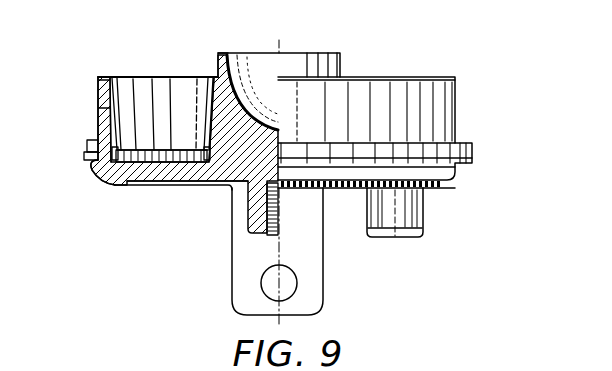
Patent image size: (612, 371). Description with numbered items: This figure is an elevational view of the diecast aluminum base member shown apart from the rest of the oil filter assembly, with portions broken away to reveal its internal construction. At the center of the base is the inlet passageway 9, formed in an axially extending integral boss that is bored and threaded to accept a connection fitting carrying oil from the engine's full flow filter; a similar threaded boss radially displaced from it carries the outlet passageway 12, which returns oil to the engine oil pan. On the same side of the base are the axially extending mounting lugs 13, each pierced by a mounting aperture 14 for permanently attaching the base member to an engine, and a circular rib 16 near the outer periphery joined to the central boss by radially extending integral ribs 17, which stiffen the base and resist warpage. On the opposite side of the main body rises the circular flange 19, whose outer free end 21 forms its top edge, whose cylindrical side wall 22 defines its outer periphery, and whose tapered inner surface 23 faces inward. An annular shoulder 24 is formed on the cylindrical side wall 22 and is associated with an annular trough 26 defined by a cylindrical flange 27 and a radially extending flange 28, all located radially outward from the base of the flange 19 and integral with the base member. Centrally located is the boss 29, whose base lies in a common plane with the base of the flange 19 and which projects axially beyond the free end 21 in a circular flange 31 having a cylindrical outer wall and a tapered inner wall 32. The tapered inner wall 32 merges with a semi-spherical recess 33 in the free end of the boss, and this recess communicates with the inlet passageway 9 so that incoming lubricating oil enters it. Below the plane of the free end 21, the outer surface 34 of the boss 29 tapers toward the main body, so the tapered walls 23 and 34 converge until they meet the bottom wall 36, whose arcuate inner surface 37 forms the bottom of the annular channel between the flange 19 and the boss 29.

The inlet passageway 9 is at (270, 237).
The outlet passageway 12 is at (404, 237).
The mounting lugs 13 is at (323, 290).
The mounting aperture 14 is at (282, 274).
The circular rib 16 is at (120, 188).
The radially extending integral ribs 17 is at (203, 187).
The circular flange 19 is at (100, 78).
The outer free end 21 is at (101, 77).
The cylindrical side wall 22 is at (99, 87).
The tapered inner surface 23 is at (112, 80).
The shoulder 24 is at (99, 108).
The annular trough 26 is at (91, 140).
The cylindrical flange 27 is at (84, 148).
The radially extending flange 28 is at (89, 163).
The boss 29 is at (216, 105).
The flange 31 is at (219, 55).
The tapered inner wall 32 is at (228, 56).
The semi-spherical recess 33 is at (262, 64).
The outer surface 34 is at (214, 122).
The bottom wall 36 is at (175, 173).
The arcuate inner surface 37 is at (192, 152).